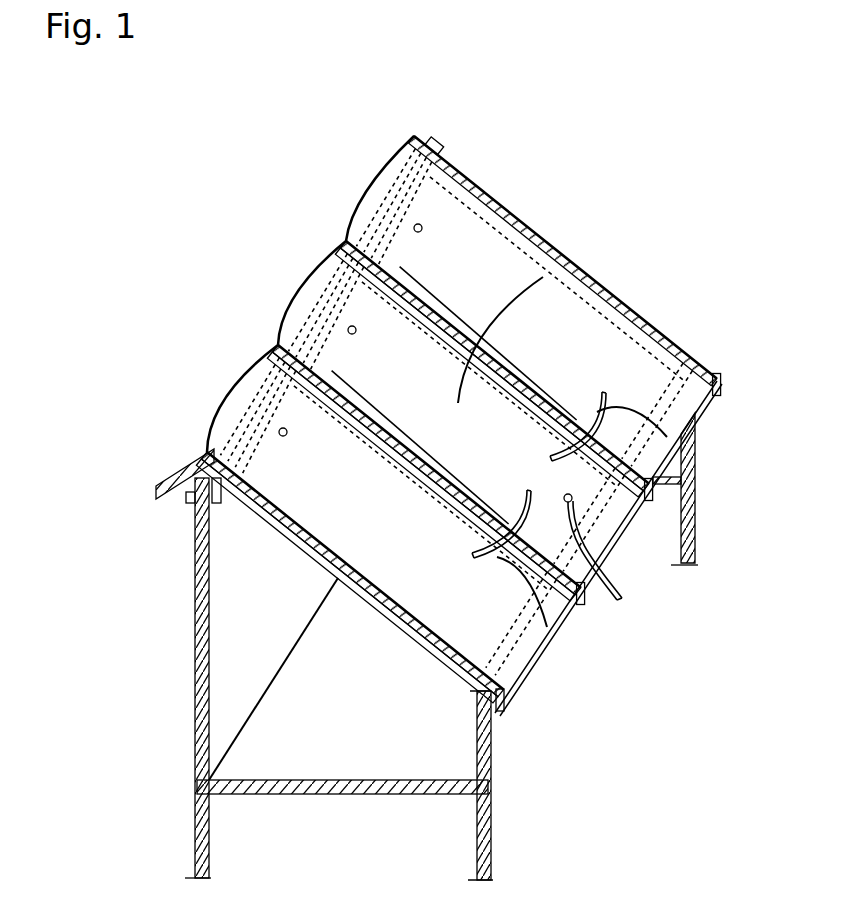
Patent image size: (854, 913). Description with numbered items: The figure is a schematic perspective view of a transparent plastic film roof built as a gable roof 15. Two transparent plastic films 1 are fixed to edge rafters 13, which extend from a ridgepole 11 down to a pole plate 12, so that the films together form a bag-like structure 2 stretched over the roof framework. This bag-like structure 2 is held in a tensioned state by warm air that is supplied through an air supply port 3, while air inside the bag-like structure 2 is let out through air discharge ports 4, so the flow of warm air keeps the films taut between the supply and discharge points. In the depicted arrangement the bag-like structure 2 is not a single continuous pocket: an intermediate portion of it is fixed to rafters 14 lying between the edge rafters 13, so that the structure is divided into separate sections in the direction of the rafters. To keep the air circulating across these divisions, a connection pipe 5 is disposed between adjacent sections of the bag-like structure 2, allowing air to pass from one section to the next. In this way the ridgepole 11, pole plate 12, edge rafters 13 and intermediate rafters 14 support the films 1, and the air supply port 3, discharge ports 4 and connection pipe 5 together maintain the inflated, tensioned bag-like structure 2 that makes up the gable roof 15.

The transparent plastic film 1 is at (294, 290).
The bag-like structure 2 is at (543, 277).
The air supply port 3 is at (616, 575).
The air discharge port 4 is at (415, 225).
The connection pipe 5 is at (685, 481).
The ridgepole 11 is at (438, 142).
The pole plate 12 is at (697, 443).
The edge rafter 13 is at (719, 383).
The rafter 14 is at (649, 497).
The gable roof 15 is at (222, 391).